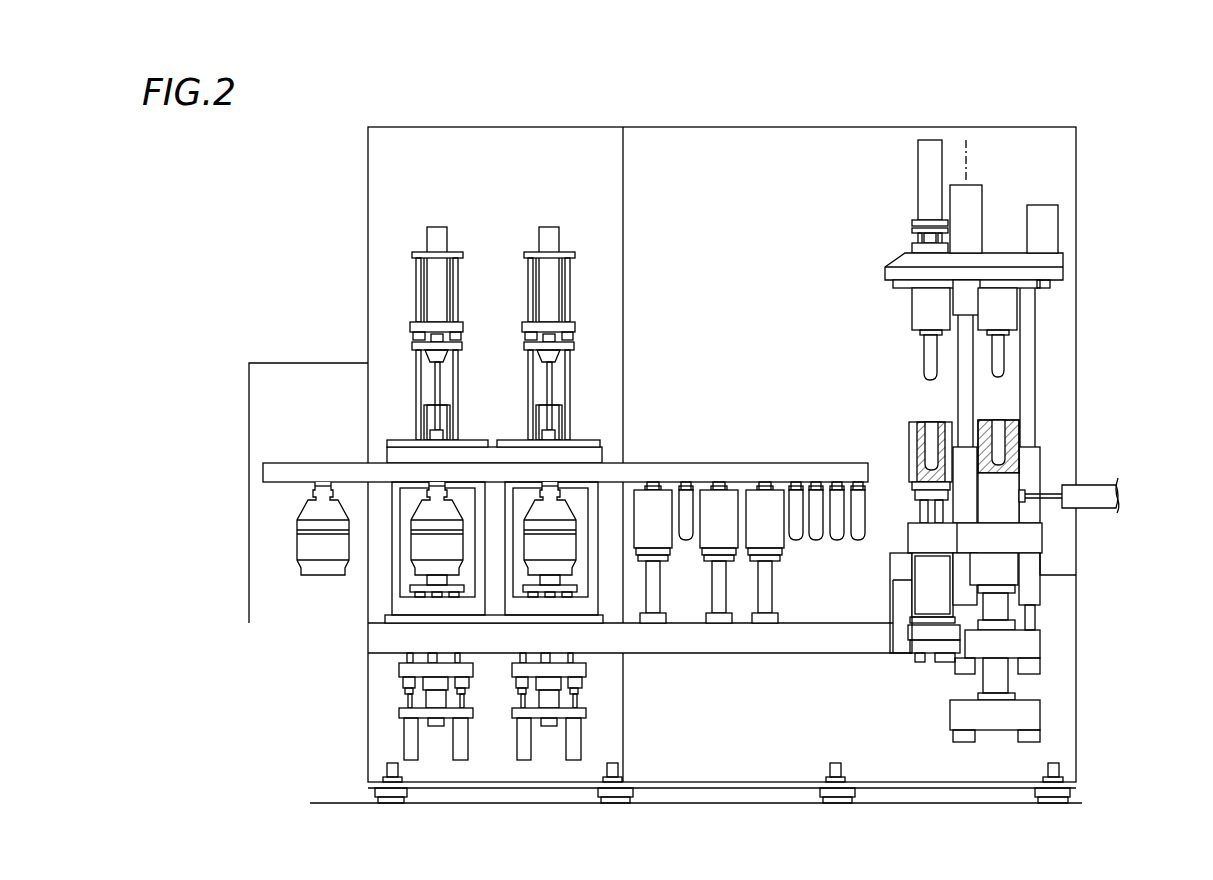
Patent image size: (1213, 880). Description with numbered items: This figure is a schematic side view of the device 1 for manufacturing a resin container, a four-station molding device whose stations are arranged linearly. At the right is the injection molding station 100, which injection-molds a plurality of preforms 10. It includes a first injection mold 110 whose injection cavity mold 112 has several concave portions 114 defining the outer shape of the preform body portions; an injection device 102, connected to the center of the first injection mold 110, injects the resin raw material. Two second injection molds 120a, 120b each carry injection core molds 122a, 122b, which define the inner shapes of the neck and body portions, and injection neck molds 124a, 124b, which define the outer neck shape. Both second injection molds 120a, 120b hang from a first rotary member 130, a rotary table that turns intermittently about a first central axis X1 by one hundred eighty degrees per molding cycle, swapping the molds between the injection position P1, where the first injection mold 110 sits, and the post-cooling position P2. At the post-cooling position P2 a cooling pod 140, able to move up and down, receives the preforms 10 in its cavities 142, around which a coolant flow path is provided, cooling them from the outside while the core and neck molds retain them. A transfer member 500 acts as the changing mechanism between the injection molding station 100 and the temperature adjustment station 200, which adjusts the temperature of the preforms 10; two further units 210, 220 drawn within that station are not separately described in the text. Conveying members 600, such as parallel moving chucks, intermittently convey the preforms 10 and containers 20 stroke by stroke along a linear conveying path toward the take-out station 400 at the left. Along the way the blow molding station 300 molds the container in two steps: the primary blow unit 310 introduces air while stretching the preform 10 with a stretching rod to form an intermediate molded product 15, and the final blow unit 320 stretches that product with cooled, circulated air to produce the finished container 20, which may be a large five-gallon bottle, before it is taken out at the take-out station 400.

The device for manufacturing a resin container 1 is at (1088, 196).
The preform 10 is at (866, 535).
The intermediate molded product 15 is at (565, 545).
The resin container 20 is at (297, 545).
The injection molding station 100 is at (969, 407).
The injection device 102 is at (1103, 512).
The first injection mold 110 is at (1072, 354).
The injection cavity mold 112 is at (1030, 436).
The concave portion 114 is at (1026, 461).
The second injection mold 120a is at (1086, 332).
The second injection mold 120b is at (846, 327).
The injection core mold 122a is at (1004, 362).
The injection core mold 122b is at (924, 350).
The injection neck mold 124a is at (1020, 343).
The injection neck mold 124b is at (912, 312).
The first rotary member 130 is at (886, 284).
The cooling pod 140 is at (930, 452).
The cavity 142 is at (928, 448).
The temperature adjustment station 200 is at (709, 434).
The first transfer device 210 is at (750, 461).
The second transfer device 220 is at (665, 461).
The blow molding station 300 is at (494, 411).
The primary blow unit 310 is at (548, 268).
The final blow unit 320 is at (440, 216).
The take-out station 400 is at (327, 348).
The transfer member 500 is at (838, 461).
The conveying member 600 is at (612, 462).
The injection position P1 is at (1003, 239).
The post-cooling position P2 is at (930, 139).
The first central axis X1 is at (966, 140).